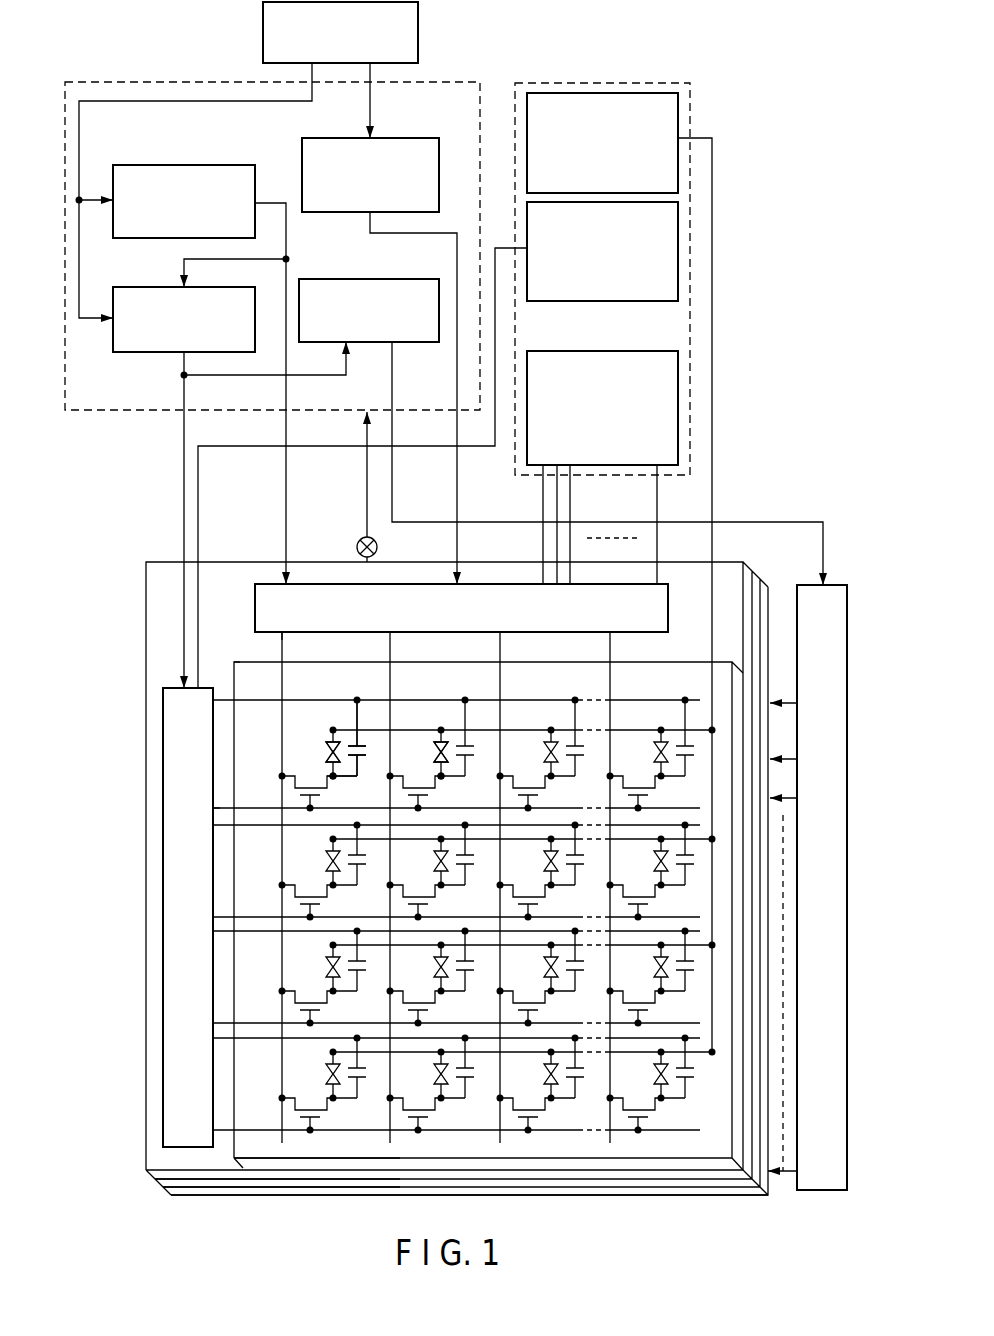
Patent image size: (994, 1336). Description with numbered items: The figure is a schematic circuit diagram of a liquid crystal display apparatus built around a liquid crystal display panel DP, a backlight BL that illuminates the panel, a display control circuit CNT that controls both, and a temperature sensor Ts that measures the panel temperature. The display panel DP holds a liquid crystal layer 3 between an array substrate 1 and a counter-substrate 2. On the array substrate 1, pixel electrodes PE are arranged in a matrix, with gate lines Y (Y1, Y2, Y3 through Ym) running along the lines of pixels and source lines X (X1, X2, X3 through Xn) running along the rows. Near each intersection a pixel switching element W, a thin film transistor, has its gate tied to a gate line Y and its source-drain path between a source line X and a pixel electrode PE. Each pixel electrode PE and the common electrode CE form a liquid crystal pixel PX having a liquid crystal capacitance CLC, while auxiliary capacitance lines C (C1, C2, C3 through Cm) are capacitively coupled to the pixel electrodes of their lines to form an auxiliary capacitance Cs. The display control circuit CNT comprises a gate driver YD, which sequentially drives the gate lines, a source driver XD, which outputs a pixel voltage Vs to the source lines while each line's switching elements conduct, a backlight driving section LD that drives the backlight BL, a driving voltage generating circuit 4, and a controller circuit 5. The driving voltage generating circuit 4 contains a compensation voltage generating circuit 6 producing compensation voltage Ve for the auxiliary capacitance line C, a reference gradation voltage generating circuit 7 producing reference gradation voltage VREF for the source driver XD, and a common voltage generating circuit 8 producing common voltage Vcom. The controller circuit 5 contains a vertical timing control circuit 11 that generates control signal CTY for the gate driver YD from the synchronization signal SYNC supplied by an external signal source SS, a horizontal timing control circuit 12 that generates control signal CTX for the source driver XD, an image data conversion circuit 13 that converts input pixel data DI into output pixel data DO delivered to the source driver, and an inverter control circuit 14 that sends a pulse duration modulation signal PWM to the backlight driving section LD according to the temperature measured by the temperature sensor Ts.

The array substrate 1 is at (225, 1165).
The counter-substrate 2 is at (325, 1153).
The liquid crystal layer 3 is at (287, 1168).
The driving voltage generating circuit 4 is at (593, 248).
The controller circuit 5 is at (262, 224).
The compensation voltage generating circuit 6 is at (602, 274).
The reference gradation voltage generating circuit 7 is at (602, 385).
The common voltage generating circuit 8 is at (623, 143).
The vertical timing control circuit 11 is at (184, 342).
The horizontal timing control circuit 12 is at (184, 224).
The image data conversion circuit 13 is at (370, 197).
The inverter control circuit 14 is at (369, 333).
The external signal source SS is at (364, 32).
The pixel data DI is at (389, 100).
The pixel data DO is at (447, 398).
The synchronization signal SYNC is at (194, 192).
The control signal CTX is at (235, 393).
The control signal CTY is at (195, 515).
The compensation voltage Ve is at (362, 468).
The common voltage Vcom is at (730, 597).
The reference gradation voltage VREF is at (600, 524).
The pulse duration modulation signal PWM is at (609, 463).
The temperature sensor Ts is at (388, 487).
The display control circuit CNT is at (747, 366).
The liquid crystal display panel DP is at (249, 1232).
The backlight BL is at (469, 1218).
The source driver XD is at (440, 608).
The gate driver YD is at (185, 1148).
The backlight driving section LD is at (807, 913).
The liquid crystal pixel PX is at (333, 711).
The source lines X is at (622, 689).
The source line X1 is at (303, 887).
The source line X2 is at (411, 887).
The source line X3 is at (521, 887).
The source line Xn is at (592, 887).
The gate lines Y is at (262, 760).
The gate line Y1 is at (456, 792).
The gate line Y2 is at (456, 897).
The gate line Y3 is at (456, 1004).
The gate line Ym is at (456, 1111).
The auxiliary capacitance line C is at (253, 668).
The auxiliary capacitance line C1 is at (253, 697).
The auxiliary capacitance line C2 is at (456, 845).
The auxiliary capacitance line C3 is at (456, 951).
The auxiliary capacitance line Cm is at (456, 1058).
The common electrode CE is at (328, 739).
The auxiliary capacitance Cs is at (368, 750).
The liquid crystal capacitance CLC is at (436, 752).
The pixel switching element W is at (311, 778).
The pixel electrode PE is at (343, 778).
The pixel voltage Vs is at (447, 780).